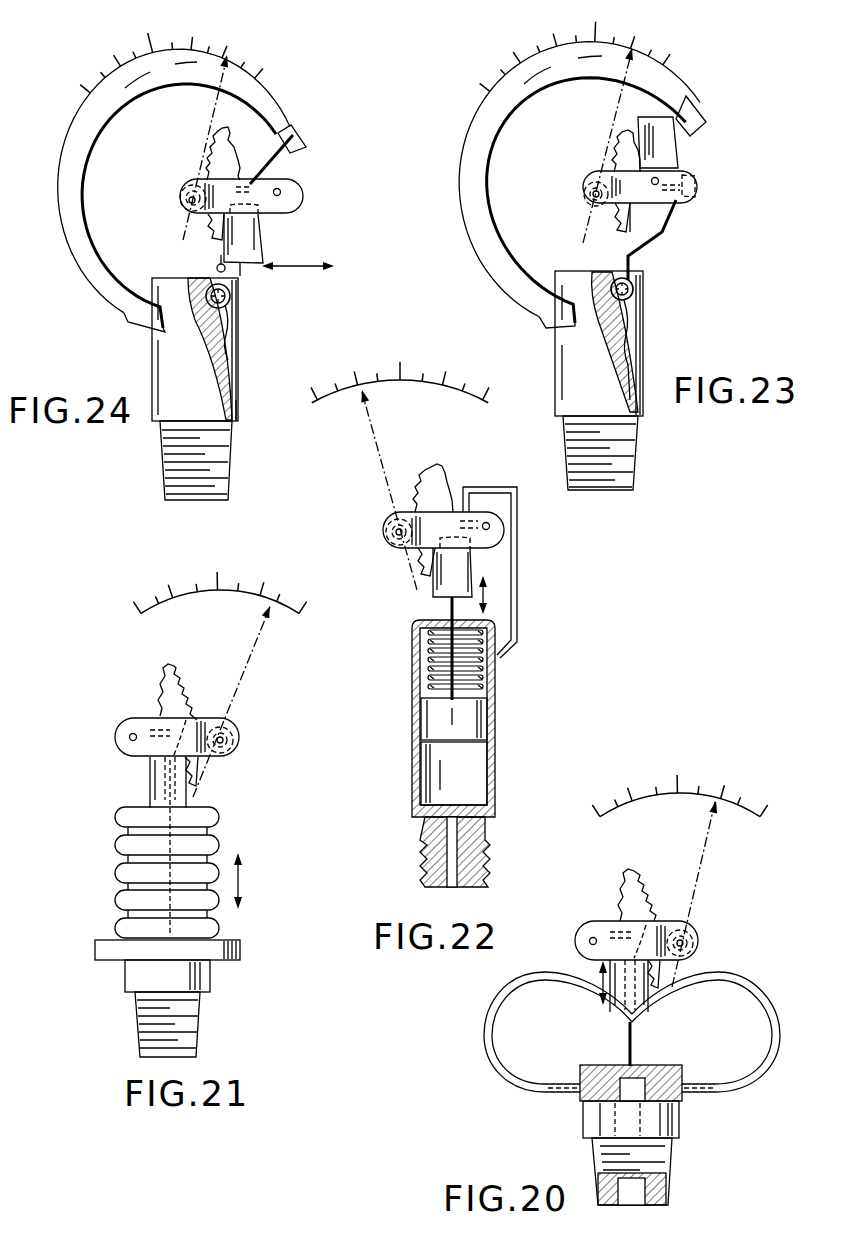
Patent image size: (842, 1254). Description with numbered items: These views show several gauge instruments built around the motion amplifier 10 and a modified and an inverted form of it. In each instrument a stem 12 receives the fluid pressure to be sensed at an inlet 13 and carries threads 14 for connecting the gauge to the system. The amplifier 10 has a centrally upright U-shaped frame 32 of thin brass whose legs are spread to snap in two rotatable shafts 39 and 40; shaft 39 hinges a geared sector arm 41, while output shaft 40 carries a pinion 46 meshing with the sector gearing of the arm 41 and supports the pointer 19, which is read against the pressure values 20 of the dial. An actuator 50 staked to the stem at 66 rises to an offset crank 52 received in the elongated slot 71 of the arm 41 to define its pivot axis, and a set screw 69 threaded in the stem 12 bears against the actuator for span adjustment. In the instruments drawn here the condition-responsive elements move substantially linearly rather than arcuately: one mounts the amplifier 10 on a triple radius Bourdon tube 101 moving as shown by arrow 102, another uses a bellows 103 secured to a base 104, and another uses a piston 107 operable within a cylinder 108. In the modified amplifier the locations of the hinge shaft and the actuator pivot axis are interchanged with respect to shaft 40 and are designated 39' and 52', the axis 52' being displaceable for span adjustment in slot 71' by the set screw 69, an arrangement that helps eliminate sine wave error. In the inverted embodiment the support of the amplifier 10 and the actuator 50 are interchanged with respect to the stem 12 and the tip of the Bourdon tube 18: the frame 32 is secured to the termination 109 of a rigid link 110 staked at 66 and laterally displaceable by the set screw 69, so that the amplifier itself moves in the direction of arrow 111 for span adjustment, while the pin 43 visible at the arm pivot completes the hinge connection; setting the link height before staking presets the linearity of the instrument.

In FIG. 24, the amplifier 10 is at (198, 227).
In FIG. 23, the amplifier 10 is at (692, 208).
In FIG. 22, the amplifier 10 is at (401, 490).
In FIG. 21, the amplifier 10 is at (116, 710).
In FIG. 20, the amplifier 10 is at (572, 918).
In FIG. 24, the stem 12 is at (175, 402).
In FIG. 23, the stem 12 is at (568, 352).
In FIG. 20, the stem 12 is at (592, 1118).
In FIG. 20, the inlet 13 is at (636, 1200).
In FIG. 24, the threads 14 is at (218, 455).
In FIG. 23, the threads 14 is at (630, 450).
In FIG. 22, the threads 14 is at (424, 869).
In FIG. 21, the threads 14 is at (140, 1030).
In FIG. 20, the threads 14 is at (668, 1168).
In FIG. 24, the Bourdon tube 18 is at (274, 100).
In FIG. 23, the Bourdon tube 18 is at (672, 96).
In FIG. 24, the pointer 19 is at (215, 105).
In FIG. 23, the pointer 19 is at (620, 96).
In FIG. 22, the pointer 19 is at (382, 472).
In FIG. 21, the pointer 19 is at (252, 668).
In FIG. 20, the pointer 19 is at (702, 866).
In FIG. 24, the pressure values 20 is at (152, 40).
In FIG. 23, the pressure values 20 is at (597, 30).
In FIG. 22, the pressure values 20 is at (400, 368).
In FIG. 21, the pressure values 20 is at (222, 578).
In FIG. 20, the pressure values 20 is at (682, 780).
In FIG. 24, the frame 32 is at (272, 223).
In FIG. 23, the frame 32 is at (594, 167).
In FIG. 22, the frame 32 is at (424, 603).
In FIG. 21, the frame 32 is at (140, 786).
In FIG. 20, the frame 32 is at (662, 989).
In FIG. 24, the shaft 39 is at (308, 184).
In FIG. 22, the shaft 39 is at (516, 514).
In FIG. 21, the shaft 39 is at (102, 746).
In FIG. 20, the shaft 39 is at (562, 935).
In FIG. 23, the hinge shaft 39' is at (694, 157).
In FIG. 23, the shaft 40 is at (590, 196).
In FIG. 22, the shaft 40 is at (392, 536).
In FIG. 21, the shaft 40 is at (228, 737).
In FIG. 20, the shaft 40 is at (688, 936).
In FIG. 24, the sector arm 41 is at (228, 150).
In FIG. 23, the sector arm 41 is at (614, 144).
In FIG. 22, the sector arm 41 is at (447, 478).
In FIG. 21, the sector arm 41 is at (170, 665).
In FIG. 20, the sector arm 41 is at (634, 872).
In FIG. 24, the pivot pin 43 is at (189, 201).
In FIG. 24, the pinion 46 is at (182, 190).
In FIG. 23, the pinion 46 is at (588, 205).
In FIG. 22, the pinion 46 is at (386, 528).
In FIG. 21, the pinion 46 is at (236, 748).
In FIG. 20, the pinion 46 is at (696, 944).
In FIG. 24, the actuator 50 is at (288, 162).
In FIG. 23, the actuator 50 is at (660, 240).
In FIG. 22, the actuator 50 is at (518, 545).
In FIG. 21, the actuator 50 is at (173, 847).
In FIG. 20, the actuator 50 is at (636, 1045).
In FIG. 22, the crank 52 is at (474, 555).
In FIG. 21, the crank 52 is at (202, 708).
In FIG. 20, the crank 52 is at (663, 912).
In FIG. 23, the pivot axis 52' is at (706, 170).
In FIG. 24, the staking location 66 is at (242, 412).
In FIG. 24, the set screw 69 is at (232, 296).
In FIG. 23, the set screw 69 is at (634, 286).
In FIG. 24, the slot 71 is at (286, 202).
In FIG. 22, the slot 71 is at (480, 490).
In FIG. 21, the slot 71 is at (151, 724).
In FIG. 20, the slot 71 is at (609, 937).
In FIG. 23, the slot 71' is at (718, 186).
In FIG. 20, the triple radius Bourdon tube 101 is at (732, 980).
In FIG. 22, the arrow 102 is at (489, 596).
In FIG. 21, the arrow 102 is at (242, 882).
In FIG. 20, the arrow 102 is at (598, 985).
In FIG. 21, the bellows 103 is at (120, 848).
In FIG. 21, the base 104 is at (105, 952).
In FIG. 22, the piston 107 is at (468, 719).
In FIG. 22, the cylinder 108 is at (414, 672).
In FIG. 24, the termination 109 is at (228, 258).
In FIG. 24, the link 110 is at (216, 268).
In FIG. 24, the arrow 111 is at (306, 270).